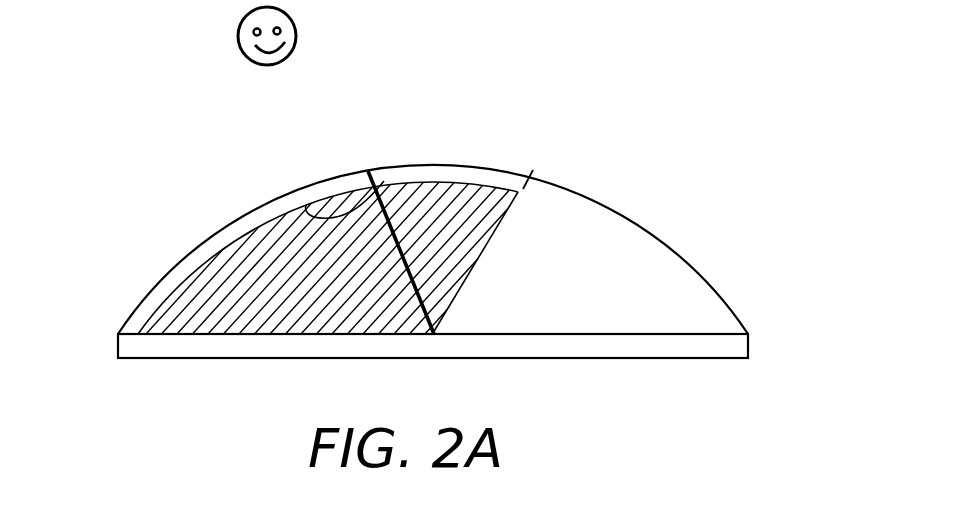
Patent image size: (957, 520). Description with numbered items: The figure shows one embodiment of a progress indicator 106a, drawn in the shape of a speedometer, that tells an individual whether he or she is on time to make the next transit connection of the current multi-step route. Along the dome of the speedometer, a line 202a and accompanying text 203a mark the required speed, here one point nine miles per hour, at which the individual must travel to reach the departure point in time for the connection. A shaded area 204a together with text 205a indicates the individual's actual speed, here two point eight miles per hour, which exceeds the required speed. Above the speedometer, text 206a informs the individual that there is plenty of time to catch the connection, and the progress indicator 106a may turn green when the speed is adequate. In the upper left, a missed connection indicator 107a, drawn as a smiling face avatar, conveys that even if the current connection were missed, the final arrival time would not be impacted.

The progress indicator 106a is at (182, 265).
The missed connection indicator 107a is at (268, 66).
The line 202a is at (306, 205).
The text 203a is at (380, 148).
The shaded area 204a is at (483, 220).
The text 205a is at (573, 165).
The text 206a is at (503, 45).